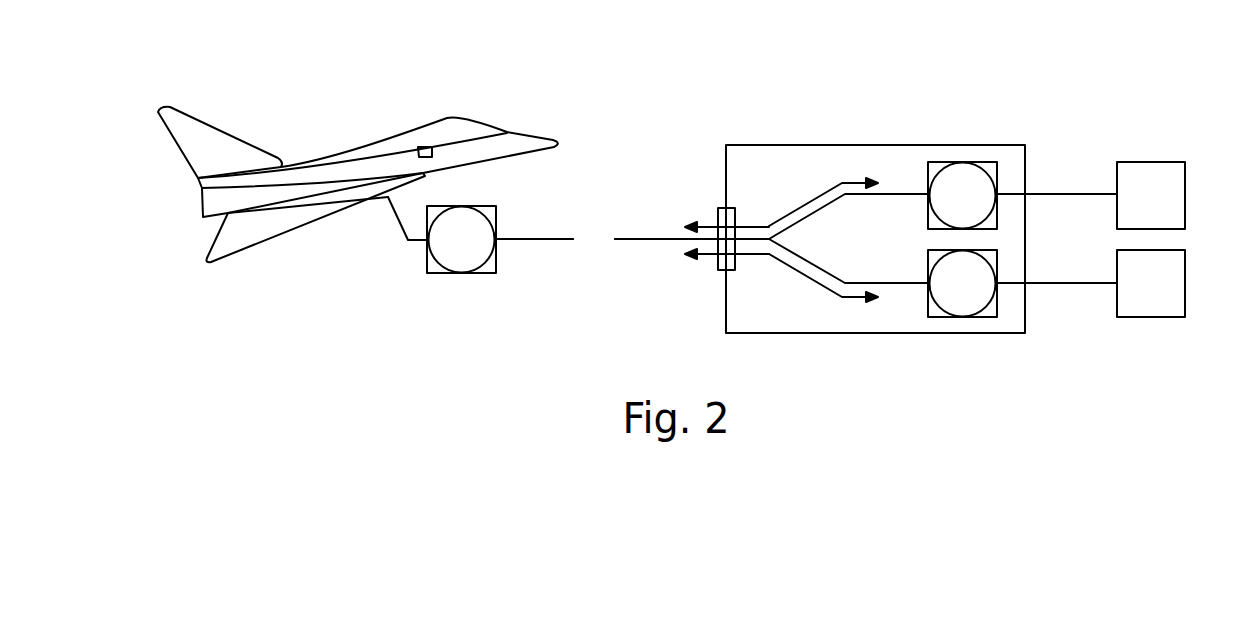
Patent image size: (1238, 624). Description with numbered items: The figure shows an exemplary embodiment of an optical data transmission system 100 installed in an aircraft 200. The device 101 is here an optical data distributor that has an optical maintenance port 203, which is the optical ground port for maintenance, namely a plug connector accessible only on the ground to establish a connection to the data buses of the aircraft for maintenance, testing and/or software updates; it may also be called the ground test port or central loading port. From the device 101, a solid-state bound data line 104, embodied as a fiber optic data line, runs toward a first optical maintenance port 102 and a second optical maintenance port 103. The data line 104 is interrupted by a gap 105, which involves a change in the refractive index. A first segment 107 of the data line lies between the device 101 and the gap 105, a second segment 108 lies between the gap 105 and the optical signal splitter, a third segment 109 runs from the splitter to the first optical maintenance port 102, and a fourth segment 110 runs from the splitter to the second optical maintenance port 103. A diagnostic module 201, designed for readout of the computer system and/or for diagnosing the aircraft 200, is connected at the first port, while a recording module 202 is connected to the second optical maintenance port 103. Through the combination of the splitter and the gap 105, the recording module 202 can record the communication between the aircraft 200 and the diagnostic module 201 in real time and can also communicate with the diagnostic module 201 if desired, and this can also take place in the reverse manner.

The optical data transmission system 100 is at (873, 227).
The device 101 is at (358, 168).
The first optical maintenance port 102 is at (988, 163).
The second optical maintenance port 103 is at (962, 318).
The solid-state bound data line 104 is at (717, 263).
The gap 105 is at (595, 223).
The first segment 107 is at (543, 240).
The second segment 108 is at (643, 238).
The third segment 109 is at (893, 193).
The fourth segment 110 is at (893, 284).
The aircraft 200 is at (248, 233).
The diagnostic module 201 is at (1150, 160).
The recording module 202 is at (1150, 318).
The optical maintenance port 203 is at (433, 272).